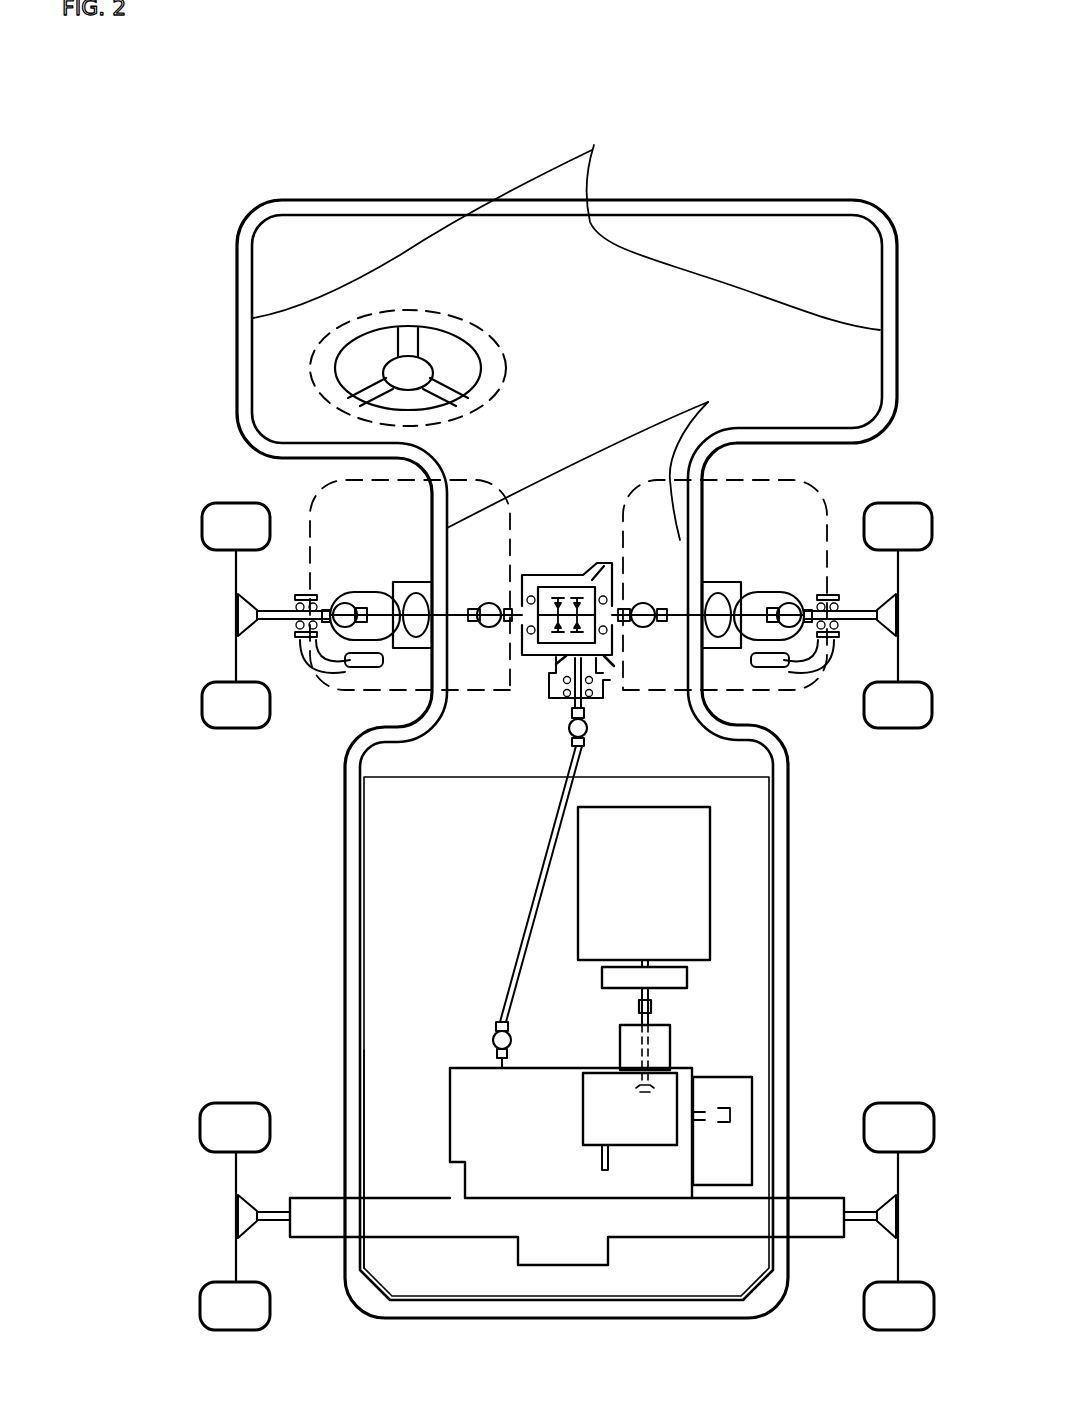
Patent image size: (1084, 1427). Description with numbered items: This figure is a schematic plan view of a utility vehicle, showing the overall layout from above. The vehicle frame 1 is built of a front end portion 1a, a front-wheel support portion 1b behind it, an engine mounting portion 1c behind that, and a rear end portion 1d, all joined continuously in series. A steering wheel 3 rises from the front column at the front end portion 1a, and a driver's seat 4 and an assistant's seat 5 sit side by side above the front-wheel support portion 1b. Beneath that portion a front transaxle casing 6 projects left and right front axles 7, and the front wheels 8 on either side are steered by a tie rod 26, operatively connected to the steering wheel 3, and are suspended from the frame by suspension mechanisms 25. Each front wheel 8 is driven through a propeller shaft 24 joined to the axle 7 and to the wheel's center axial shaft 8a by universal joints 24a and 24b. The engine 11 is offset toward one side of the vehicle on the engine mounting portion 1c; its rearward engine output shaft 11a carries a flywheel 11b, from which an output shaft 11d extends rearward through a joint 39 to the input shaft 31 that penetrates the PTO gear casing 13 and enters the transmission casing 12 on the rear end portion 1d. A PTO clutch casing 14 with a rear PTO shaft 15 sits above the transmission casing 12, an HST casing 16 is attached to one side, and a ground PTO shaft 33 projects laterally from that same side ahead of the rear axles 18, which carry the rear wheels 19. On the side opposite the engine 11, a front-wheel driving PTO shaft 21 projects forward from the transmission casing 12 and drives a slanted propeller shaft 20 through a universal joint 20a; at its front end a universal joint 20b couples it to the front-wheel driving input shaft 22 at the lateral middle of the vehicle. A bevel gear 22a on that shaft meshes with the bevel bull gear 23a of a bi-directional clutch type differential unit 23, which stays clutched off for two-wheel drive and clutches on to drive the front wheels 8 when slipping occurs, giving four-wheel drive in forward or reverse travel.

The vehicle frame 1 is at (740, 202).
The front end portion 1a is at (566, 235).
The front-wheel support portion 1b is at (593, 465).
The engine mounting portion 1c is at (345, 862).
The rear end portion 1d is at (346, 1114).
The steering wheel 3 is at (507, 350).
The driver's seat 4 is at (310, 505).
The assistant's seat 5 is at (795, 492).
The front transaxle casing 6 is at (522, 570).
The front axle 7 is at (520, 632).
The front wheel 8 is at (236, 730).
The center axial shaft 8a is at (270, 625).
The engine 11 is at (658, 903).
The engine output shaft 11a is at (650, 962).
The flywheel 11b is at (688, 978).
The output shaft 11d is at (657, 996).
The transmission casing 12 is at (521, 1129).
The PTO gear casing 13 is at (672, 1043).
The PTO clutch casing 14 is at (631, 1115).
The rear PTO shaft 15 is at (598, 1158).
The HST casing 16 is at (752, 1097).
The axle 18 is at (274, 1222).
The rear wheel 19 is at (236, 1102).
The propeller shaft 20 is at (530, 922).
The universal joint 20a is at (495, 1040).
The universal joint 20b is at (588, 734).
The front-wheel driving PTO shaft 21 is at (497, 1066).
The front-wheel driving input shaft 22 is at (602, 690).
The bevel gear 22a is at (553, 668).
The differential unit 23 is at (570, 565).
The bevel bull gear 23a is at (598, 568).
The propeller shaft 24 is at (385, 605).
The universal joint 24a is at (489, 624).
The universal joint 24b is at (332, 597).
The suspension mechanism 25 is at (345, 603).
The tie rod 26 is at (365, 675).
The input shaft 31 is at (643, 1017).
The ground PTO shaft 33 is at (724, 1112).
The joint 39 is at (638, 1007).